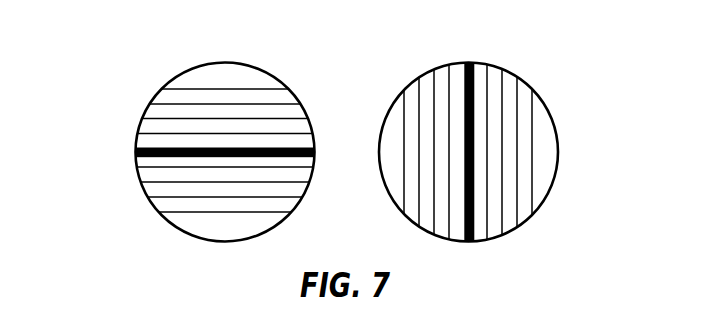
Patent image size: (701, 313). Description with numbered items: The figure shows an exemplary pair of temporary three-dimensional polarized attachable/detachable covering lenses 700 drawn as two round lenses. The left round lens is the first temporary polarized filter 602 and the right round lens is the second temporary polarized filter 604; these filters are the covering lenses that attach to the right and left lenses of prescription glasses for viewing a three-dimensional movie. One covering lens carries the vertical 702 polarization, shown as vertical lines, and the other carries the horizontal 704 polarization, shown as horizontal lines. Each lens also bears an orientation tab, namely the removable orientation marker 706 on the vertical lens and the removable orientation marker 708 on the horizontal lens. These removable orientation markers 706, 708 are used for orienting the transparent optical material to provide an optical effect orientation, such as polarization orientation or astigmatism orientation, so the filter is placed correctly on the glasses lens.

The polarizer pair assembly 700 is at (591, 49).
The first temporary 3-D polarized filter 602 is at (133, 125).
The second temporary 3-D polarized filter 604 is at (558, 194).
The vertical temporary 3-D polarized attachable/detachable covering lens 702 is at (517, 143).
The horizontal temporary 3-D polarized attachable/detachable covering lens 704 is at (165, 136).
The removable orientation marker 706 is at (463, 190).
The removable orientation marker 708 is at (253, 148).